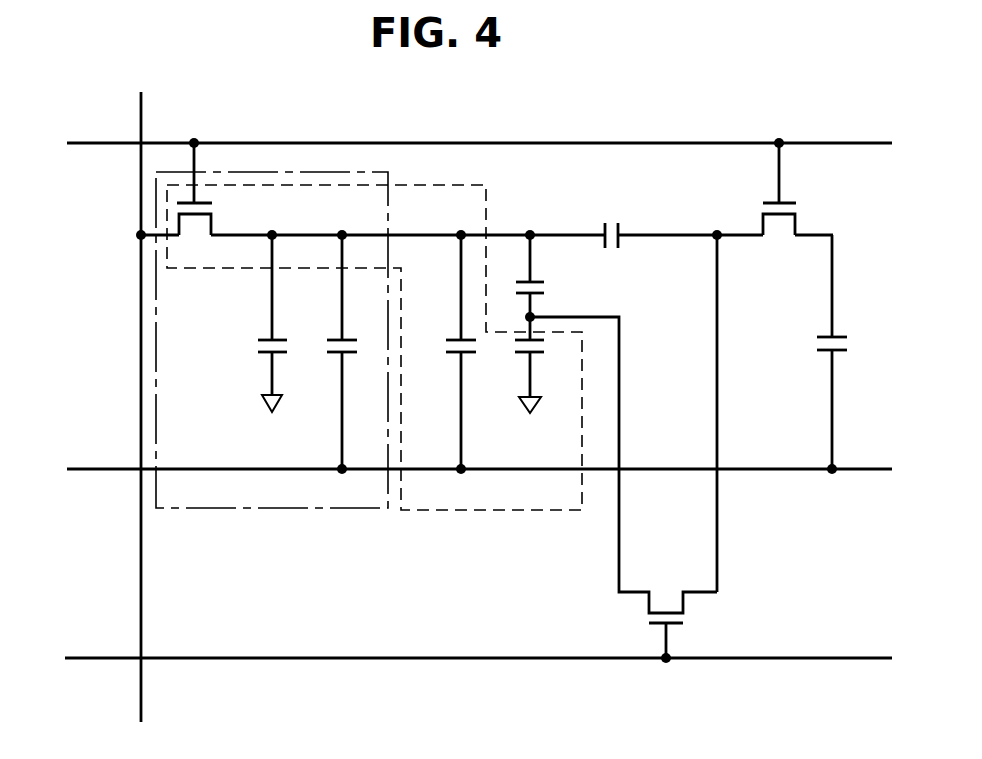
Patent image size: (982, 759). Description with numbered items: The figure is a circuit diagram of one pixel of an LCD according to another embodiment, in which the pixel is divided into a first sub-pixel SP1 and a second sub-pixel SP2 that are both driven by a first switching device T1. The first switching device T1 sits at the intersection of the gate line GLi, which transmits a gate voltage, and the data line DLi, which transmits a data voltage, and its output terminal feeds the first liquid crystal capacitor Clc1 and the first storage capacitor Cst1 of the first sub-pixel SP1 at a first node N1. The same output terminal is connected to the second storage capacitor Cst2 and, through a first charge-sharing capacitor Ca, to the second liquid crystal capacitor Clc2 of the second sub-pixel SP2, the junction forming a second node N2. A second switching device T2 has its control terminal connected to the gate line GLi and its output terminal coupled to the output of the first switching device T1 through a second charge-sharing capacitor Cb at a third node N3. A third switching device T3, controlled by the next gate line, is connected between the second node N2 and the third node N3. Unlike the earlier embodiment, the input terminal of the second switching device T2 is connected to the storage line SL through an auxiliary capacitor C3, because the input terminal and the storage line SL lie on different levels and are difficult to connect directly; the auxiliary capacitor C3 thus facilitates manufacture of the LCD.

The data line DLi is at (142, 396).
The i-th gate line GLi is at (462, 144).
The storage line SL is at (464, 471).
The first switching device T1 is at (194, 201).
The second switching device T2 is at (779, 201).
The third switching device T3 is at (623, 487).
The first node N1 is at (271, 274).
The second node N2 is at (513, 316).
The third node N3 is at (716, 400).
The first liquid crystal capacitor Clc1 is at (258, 364).
The first storage capacitor Cst1 is at (357, 352).
The second storage capacitor Cst2 is at (445, 352).
The second liquid crystal capacitor Clc2 is at (544, 376).
The first charge-sharing capacitor Ca is at (543, 269).
The second charge-sharing capacitor Cb is at (611, 224).
The auxiliary capacitor C3 is at (843, 352).
The first sub-pixel SP1 is at (267, 510).
The second sub-pixel SP2 is at (482, 510).